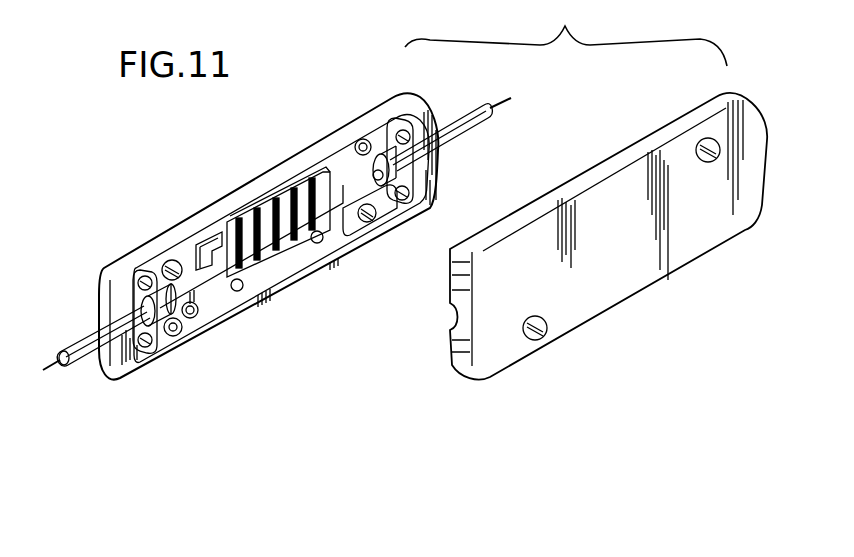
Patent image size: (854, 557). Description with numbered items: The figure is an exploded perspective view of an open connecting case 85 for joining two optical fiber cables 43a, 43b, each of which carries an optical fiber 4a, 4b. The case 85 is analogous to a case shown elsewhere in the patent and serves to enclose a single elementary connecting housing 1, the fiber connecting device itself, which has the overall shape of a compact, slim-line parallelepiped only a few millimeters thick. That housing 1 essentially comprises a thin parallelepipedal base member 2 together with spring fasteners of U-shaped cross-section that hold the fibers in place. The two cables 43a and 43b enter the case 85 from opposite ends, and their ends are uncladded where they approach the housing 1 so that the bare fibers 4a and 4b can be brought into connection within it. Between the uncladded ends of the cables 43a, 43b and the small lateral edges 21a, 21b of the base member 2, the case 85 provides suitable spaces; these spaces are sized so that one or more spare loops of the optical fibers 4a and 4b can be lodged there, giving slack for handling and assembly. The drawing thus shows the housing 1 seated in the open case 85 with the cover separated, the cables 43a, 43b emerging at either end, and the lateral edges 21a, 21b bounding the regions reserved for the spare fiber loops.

The case 85 is at (212, 172).
The housing 1 is at (281, 262).
The base member 2 is at (335, 226).
The optical fiber 4a is at (190, 277).
The optical fiber 4b is at (362, 165).
The small lateral edge 21a is at (193, 327).
The small lateral edge 21b is at (388, 205).
The cable 43a is at (80, 343).
The cable 43b is at (463, 117).